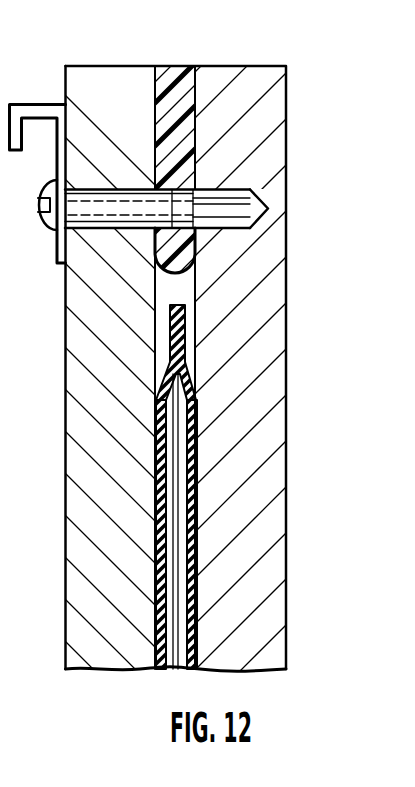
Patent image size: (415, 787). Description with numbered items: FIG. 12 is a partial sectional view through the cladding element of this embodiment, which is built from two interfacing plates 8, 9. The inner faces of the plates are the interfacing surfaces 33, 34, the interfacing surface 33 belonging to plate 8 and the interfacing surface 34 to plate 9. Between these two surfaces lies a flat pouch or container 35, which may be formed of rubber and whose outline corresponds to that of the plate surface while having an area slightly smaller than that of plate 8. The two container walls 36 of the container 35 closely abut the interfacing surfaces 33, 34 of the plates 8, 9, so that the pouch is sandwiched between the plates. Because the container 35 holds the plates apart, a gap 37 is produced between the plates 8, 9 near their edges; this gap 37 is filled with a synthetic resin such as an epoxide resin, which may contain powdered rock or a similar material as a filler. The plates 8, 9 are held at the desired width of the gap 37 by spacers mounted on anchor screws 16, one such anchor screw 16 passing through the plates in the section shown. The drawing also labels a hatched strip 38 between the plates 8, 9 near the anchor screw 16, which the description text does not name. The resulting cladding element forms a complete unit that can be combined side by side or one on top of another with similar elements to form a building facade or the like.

The plate 8 is at (255, 78).
The plate 9 is at (84, 80).
The sealing strip 38 is at (166, 84).
The anchor screw 16 is at (43, 228).
The interfacing surface 34 is at (155, 290).
The gap 37 is at (183, 285).
The interfacing surface 33 is at (193, 330).
The container 35 is at (180, 452).
The container wall 36 is at (155, 455).